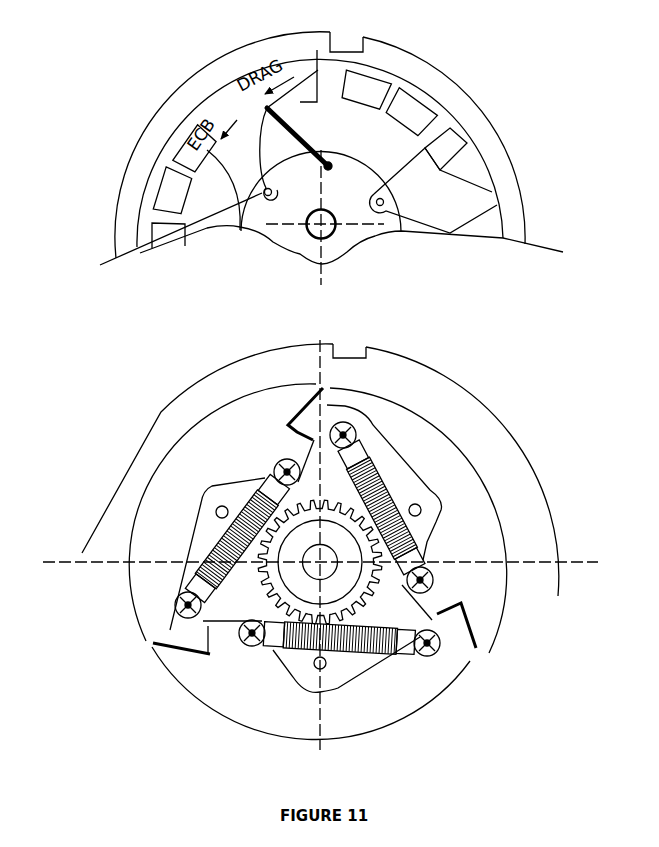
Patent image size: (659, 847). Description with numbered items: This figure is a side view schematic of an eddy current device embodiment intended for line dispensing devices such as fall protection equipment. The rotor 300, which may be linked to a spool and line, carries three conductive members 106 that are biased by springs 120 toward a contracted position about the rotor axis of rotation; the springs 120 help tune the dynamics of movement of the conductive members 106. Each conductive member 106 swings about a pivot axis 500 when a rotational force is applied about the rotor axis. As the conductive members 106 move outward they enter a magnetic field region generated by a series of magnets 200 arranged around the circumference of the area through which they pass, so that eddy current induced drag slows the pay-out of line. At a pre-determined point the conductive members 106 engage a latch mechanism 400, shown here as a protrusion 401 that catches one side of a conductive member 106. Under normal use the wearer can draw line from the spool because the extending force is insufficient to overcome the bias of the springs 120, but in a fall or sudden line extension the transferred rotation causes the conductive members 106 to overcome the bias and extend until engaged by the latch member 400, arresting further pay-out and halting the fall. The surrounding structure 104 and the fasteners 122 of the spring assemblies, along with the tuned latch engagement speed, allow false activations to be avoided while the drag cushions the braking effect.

The housing wall 104 is at (112, 495).
The conductive member 106 is at (500, 198).
The spring 120 is at (392, 484).
The fastener 122 is at (358, 435).
The magnets 200 is at (468, 138).
The rotor 300 is at (300, 240).
The latch mechanism 400 is at (454, 73).
The protrusion 401 is at (342, 46).
The pivot axis 500 is at (262, 195).